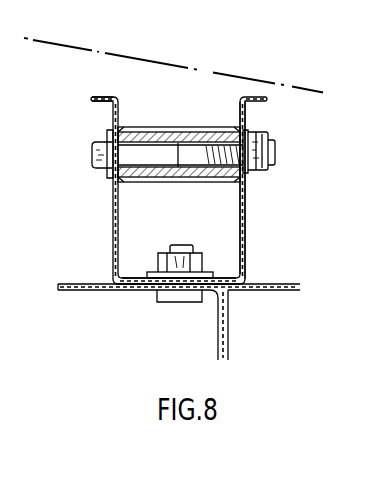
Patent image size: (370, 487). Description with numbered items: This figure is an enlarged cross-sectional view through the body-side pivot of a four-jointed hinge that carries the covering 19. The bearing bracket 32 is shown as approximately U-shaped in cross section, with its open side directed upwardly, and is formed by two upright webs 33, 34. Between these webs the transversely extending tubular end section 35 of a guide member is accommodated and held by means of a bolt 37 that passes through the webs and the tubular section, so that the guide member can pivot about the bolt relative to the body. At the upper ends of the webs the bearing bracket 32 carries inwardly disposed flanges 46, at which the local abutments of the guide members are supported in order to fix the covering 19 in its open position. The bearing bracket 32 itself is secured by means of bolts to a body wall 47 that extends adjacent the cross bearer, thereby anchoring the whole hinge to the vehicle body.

The covering 19 is at (125, 53).
The bearing bracket 32 is at (112, 218).
The upright web 33 is at (113, 251).
The upright web 34 is at (244, 223).
The tubular end section 35 is at (152, 133).
The bolt 37 is at (97, 141).
The flange 46 is at (103, 98).
The body wall 47 is at (277, 291).